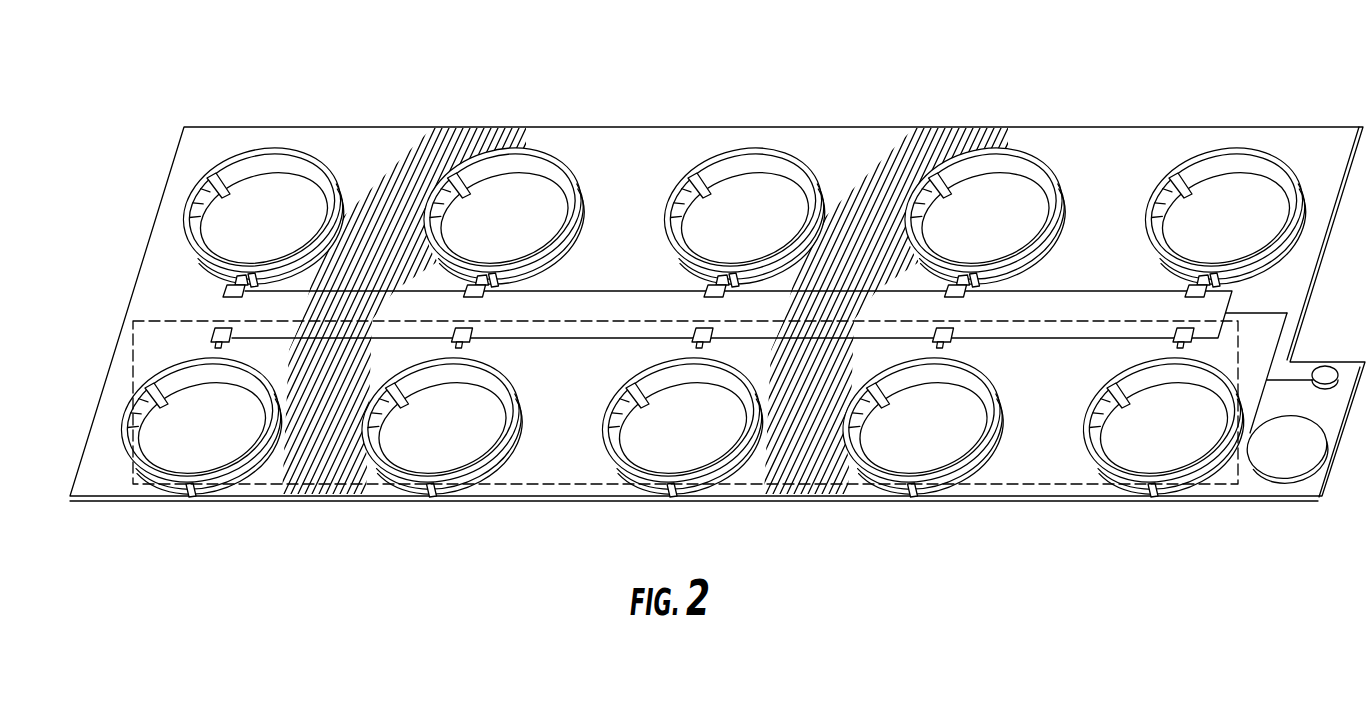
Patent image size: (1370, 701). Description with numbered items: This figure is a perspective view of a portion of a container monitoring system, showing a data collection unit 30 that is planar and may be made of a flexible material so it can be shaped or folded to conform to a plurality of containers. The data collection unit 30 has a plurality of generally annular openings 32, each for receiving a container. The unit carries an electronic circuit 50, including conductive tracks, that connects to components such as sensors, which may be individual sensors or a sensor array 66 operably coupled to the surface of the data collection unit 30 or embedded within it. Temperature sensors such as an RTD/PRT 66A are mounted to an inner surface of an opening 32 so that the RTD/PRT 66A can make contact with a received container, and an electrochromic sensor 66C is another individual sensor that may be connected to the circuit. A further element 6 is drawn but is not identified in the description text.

The battery 6 is at (1278, 453).
The data collection unit 30 is at (390, 127).
The opening 32 is at (763, 212).
The electronic circuit 50 is at (1286, 314).
The sensor array 66 is at (313, 478).
The resistance temperature detector / platinum resistance thermometer 66A is at (272, 176).
The electrochromic sensor 66C is at (222, 289).